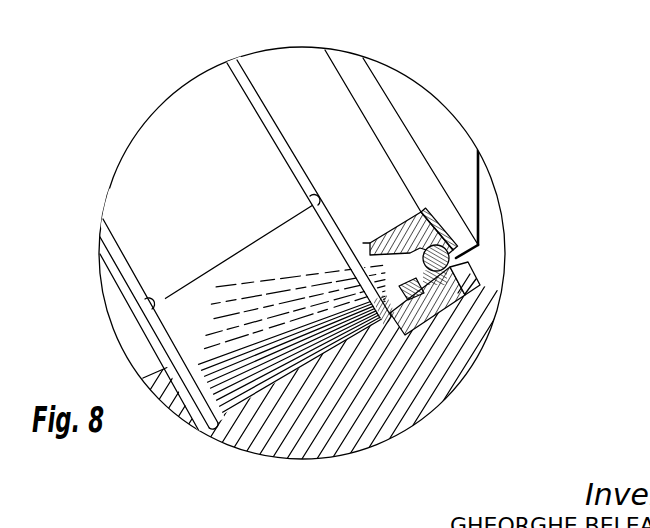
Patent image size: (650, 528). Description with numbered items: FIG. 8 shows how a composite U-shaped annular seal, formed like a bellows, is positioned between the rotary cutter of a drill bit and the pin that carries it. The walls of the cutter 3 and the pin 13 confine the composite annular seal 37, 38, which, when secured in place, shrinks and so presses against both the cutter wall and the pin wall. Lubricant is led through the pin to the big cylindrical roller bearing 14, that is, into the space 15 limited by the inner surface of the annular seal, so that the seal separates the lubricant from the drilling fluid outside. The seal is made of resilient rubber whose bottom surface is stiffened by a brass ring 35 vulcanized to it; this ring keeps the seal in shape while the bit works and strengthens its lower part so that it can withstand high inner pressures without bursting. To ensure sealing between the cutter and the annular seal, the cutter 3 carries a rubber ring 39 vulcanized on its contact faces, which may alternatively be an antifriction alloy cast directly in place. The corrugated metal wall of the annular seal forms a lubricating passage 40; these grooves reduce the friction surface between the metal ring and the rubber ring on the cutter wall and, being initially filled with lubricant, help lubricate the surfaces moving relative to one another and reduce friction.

The cutter 3 is at (443, 373).
The pin 13 is at (462, 142).
The big cylindrical roller bearing 14 is at (340, 317).
The space 15 is at (398, 257).
The brass ring 35 is at (447, 236).
The composite annular seal (metal part) 37 is at (470, 255).
The composite annular seal (second part) 38 is at (432, 208).
The rubber ring 39 is at (450, 292).
The lubricating passage 40 is at (447, 302).